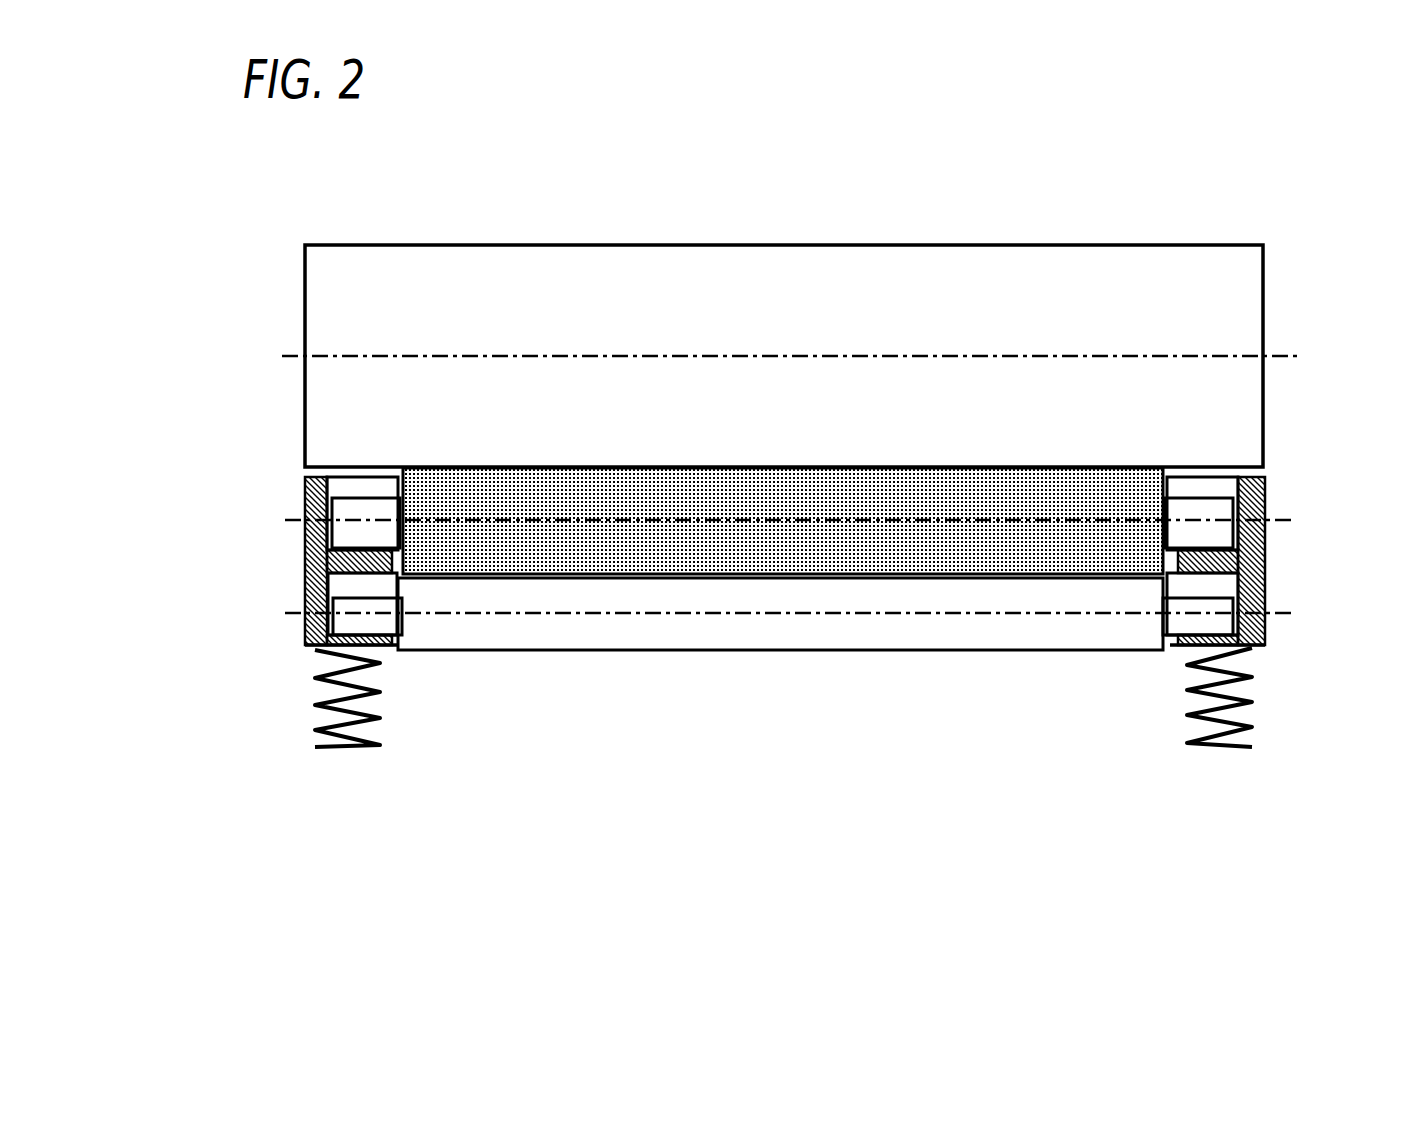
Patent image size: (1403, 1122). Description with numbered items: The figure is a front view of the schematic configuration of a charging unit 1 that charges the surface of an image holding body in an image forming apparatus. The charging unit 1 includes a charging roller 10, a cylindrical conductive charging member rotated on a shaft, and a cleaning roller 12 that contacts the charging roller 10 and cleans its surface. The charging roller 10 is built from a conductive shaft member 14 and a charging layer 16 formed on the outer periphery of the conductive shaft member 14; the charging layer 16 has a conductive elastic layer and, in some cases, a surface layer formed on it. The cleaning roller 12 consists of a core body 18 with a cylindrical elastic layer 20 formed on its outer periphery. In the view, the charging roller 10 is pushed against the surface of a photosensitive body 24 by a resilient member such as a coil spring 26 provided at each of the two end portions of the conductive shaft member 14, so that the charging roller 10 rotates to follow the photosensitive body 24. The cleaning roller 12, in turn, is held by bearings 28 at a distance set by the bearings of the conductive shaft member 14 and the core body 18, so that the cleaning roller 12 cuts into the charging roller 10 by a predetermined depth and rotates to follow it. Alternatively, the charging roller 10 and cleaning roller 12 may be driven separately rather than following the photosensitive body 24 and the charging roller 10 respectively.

The charging unit 1 is at (681, 740).
The charging roller 10 is at (1155, 448).
The cleaning roller 12 is at (766, 667).
The conductive shaft member 14 is at (1212, 505).
The charging layer 16 is at (458, 485).
The core body 18 is at (1172, 635).
The cylindrical elastic layer 20 is at (985, 625).
The photosensitive body 24 is at (1012, 270).
The coil spring 26 is at (1228, 747).
The bearings 28 is at (1265, 497).